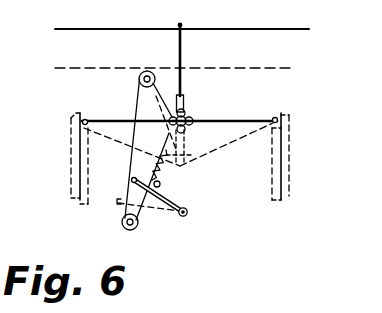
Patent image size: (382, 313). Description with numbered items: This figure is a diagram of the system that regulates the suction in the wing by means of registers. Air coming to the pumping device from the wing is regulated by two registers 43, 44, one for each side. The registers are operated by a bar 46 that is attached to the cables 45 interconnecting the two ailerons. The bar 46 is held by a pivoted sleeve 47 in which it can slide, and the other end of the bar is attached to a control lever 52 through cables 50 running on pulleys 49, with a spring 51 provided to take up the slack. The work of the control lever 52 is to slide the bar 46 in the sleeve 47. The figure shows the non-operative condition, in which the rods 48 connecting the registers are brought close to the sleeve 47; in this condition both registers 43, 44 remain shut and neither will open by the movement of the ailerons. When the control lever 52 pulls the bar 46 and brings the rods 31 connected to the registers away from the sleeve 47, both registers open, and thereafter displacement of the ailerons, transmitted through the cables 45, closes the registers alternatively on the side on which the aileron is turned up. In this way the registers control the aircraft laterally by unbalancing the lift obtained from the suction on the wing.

The rods 31 is at (178, 149).
The register 43 is at (290, 142).
The register 44 is at (84, 167).
The cables 45 is at (162, 30).
The bar 46 is at (182, 45).
The pivoted sleeve 47 is at (185, 97).
The rods 48 is at (241, 117).
The pulleys 49 is at (139, 79).
The cables 50 is at (137, 97).
The spring 51 is at (171, 178).
The control lever 52 is at (188, 208).